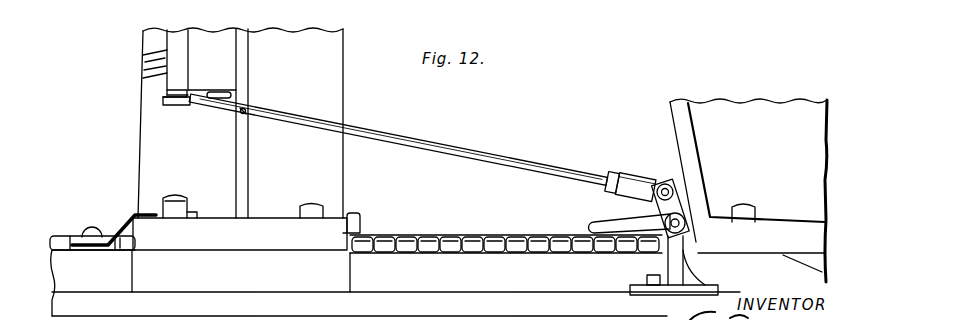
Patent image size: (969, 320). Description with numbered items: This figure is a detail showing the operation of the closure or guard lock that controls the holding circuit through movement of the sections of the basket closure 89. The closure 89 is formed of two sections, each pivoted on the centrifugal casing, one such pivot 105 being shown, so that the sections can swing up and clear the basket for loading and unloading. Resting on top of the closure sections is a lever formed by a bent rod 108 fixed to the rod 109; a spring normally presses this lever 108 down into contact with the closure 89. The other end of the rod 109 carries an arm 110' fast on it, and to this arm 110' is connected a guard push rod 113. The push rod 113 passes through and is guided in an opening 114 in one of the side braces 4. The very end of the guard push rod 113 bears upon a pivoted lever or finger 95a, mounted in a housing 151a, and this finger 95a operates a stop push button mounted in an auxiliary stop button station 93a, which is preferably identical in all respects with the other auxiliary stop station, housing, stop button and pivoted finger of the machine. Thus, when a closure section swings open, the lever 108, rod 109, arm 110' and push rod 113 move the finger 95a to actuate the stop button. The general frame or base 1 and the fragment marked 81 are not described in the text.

The machine base 1 is at (390, 200).
The side brace 4 is at (340, 97).
The part 81 is at (71, 5).
The basket closure 89 is at (509, 237).
The auxiliary stop button station 93a is at (222, 45).
The pivoted lever or finger 95a is at (166, 101).
The pivot of closure section 105 is at (109, 231).
The bent rod lever 108 is at (612, 229).
The rod 109 is at (682, 225).
The arm 110' is at (700, 206).
The guard push rod 113 is at (487, 158).
The opening 114 is at (241, 114).
The housing 151a is at (173, 48).